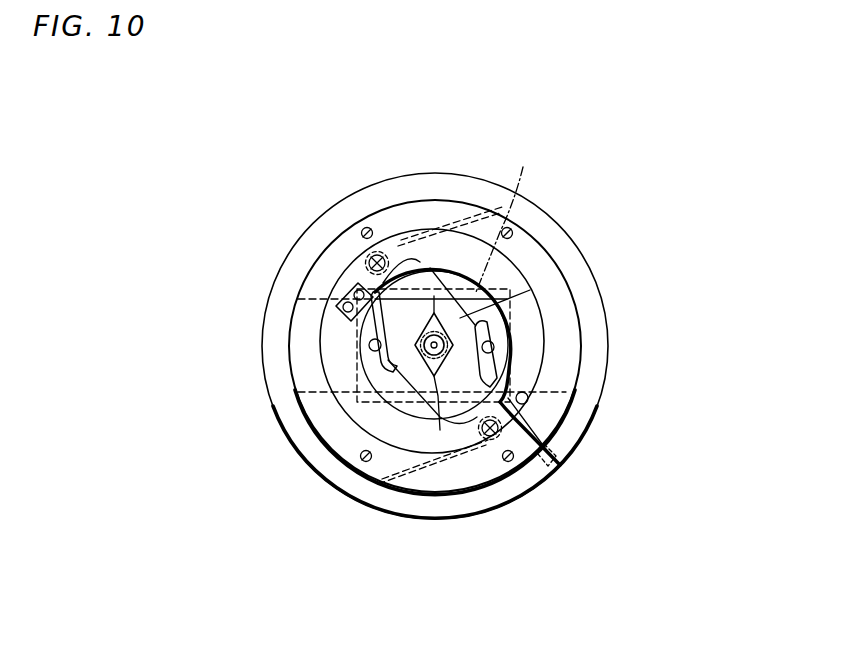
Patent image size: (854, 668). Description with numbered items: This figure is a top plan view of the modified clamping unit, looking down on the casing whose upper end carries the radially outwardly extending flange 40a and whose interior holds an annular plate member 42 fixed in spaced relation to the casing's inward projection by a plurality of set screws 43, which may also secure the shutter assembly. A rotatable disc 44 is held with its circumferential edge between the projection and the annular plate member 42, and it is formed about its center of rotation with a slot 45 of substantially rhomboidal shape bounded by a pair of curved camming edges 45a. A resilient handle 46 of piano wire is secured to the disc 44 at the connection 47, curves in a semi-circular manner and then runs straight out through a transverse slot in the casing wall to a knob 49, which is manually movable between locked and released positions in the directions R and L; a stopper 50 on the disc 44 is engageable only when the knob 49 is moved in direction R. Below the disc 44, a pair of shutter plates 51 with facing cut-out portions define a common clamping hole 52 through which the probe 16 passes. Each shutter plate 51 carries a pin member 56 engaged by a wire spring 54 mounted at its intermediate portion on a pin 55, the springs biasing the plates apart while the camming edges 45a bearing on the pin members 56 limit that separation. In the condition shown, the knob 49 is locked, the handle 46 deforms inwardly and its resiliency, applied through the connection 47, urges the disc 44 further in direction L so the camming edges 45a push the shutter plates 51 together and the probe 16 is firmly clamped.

The probe 16 is at (512, 214).
The flange 40a is at (457, 184).
The annular plate member 42 is at (540, 248).
The set screws 43 is at (367, 227).
The rotatable disc 44 is at (346, 425).
The slot 45 is at (505, 298).
The camming edges 45a is at (356, 326).
The handle 46 is at (522, 373).
The connection 47 is at (345, 301).
The knob 49 is at (549, 460).
The stopper 50 is at (528, 398).
The shutter plates 51 is at (392, 370).
The clamping hole 52 is at (432, 420).
The wire springs 54 is at (418, 226).
The pin 55 is at (366, 258).
The pin members 56 is at (358, 362).
The direction R is at (644, 372).
The direction L is at (622, 446).